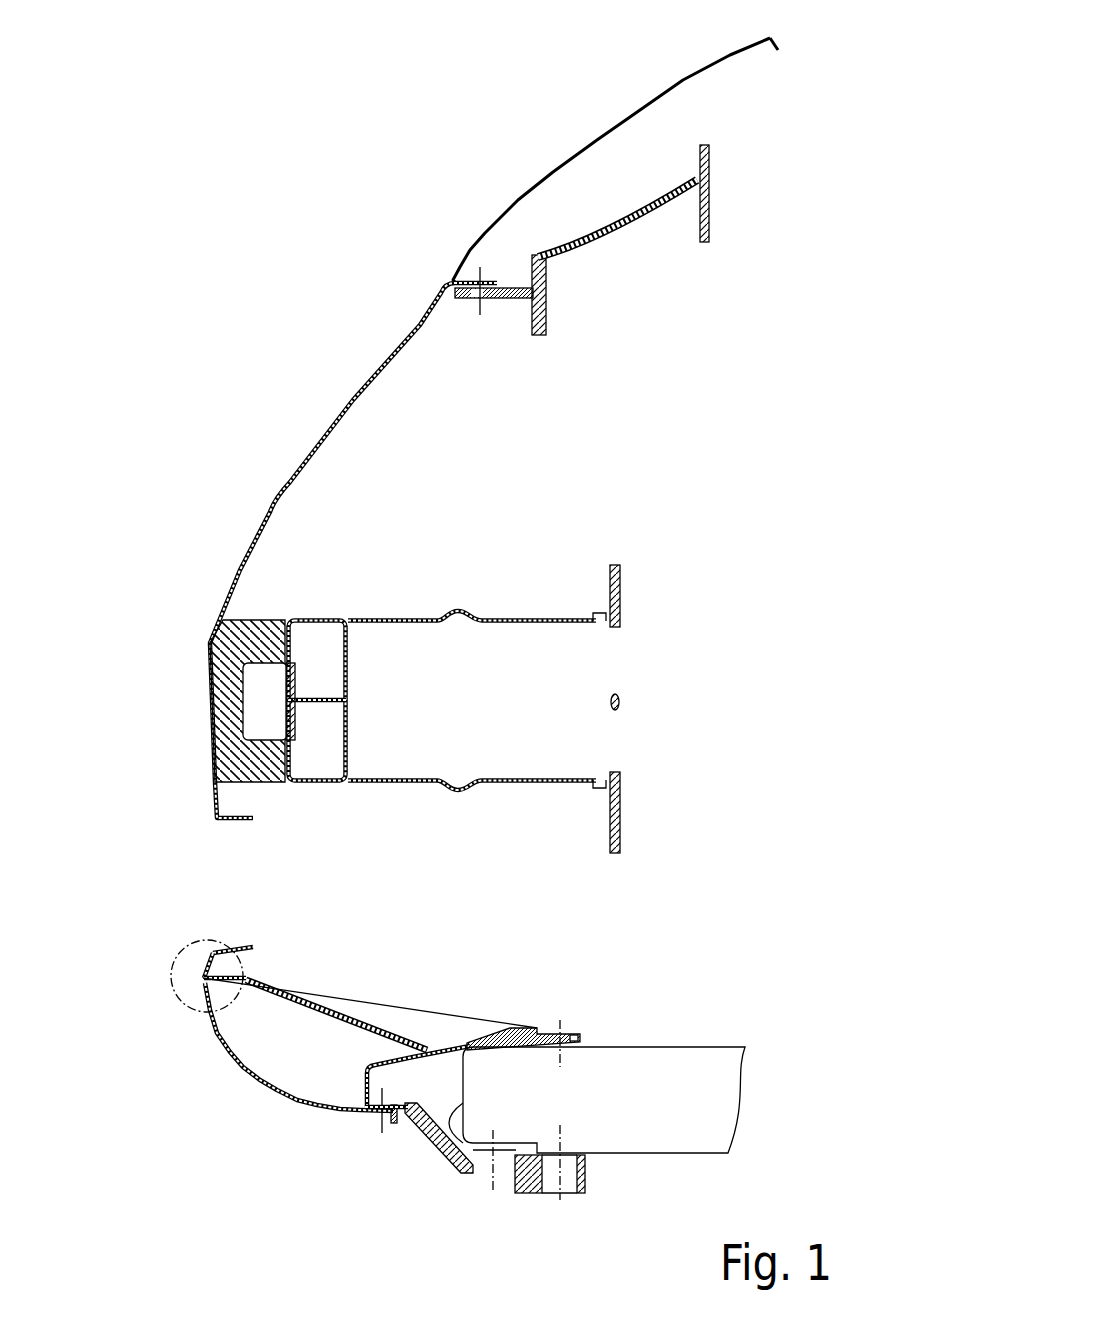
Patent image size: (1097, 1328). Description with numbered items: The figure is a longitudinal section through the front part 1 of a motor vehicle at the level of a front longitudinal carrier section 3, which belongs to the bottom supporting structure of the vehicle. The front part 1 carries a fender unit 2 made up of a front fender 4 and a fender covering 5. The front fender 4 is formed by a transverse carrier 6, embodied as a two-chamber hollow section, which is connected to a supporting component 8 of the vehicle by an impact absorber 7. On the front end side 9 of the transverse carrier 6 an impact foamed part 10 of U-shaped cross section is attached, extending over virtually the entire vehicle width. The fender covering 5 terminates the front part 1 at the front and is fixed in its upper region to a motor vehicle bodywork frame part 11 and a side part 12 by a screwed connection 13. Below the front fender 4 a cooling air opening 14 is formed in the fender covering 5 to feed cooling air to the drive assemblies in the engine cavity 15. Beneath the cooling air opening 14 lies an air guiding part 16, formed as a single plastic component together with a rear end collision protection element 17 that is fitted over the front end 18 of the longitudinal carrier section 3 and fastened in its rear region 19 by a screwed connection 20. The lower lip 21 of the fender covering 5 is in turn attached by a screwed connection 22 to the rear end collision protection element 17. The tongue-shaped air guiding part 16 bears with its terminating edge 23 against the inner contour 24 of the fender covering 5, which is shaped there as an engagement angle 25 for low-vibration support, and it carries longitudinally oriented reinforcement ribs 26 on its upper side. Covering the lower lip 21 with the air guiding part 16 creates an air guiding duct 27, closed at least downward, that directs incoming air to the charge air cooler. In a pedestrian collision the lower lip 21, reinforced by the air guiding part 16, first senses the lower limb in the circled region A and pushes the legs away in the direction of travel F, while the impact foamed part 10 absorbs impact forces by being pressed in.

The front part 1 is at (292, 156).
The fender unit 2 is at (216, 545).
The front longitudinal carrier section 3 is at (665, 1055).
The front fender 4 is at (419, 597).
The fender covering 5 is at (352, 405).
The transverse carrier 6 is at (330, 737).
The impact absorber 7 is at (546, 788).
The supporting component 8 is at (620, 812).
The front end side 9 is at (283, 720).
The impact foamed part 10 is at (223, 683).
The motor vehicle bodywork frame part 11 is at (548, 294).
The side part 12 is at (622, 118).
The screwed connection 13 is at (480, 312).
The cooling air opening 14 is at (180, 874).
The engine cavity 15 is at (683, 591).
The air guiding part 16 is at (333, 1000).
The rear end collision protection element 17 is at (522, 1195).
The front end 18 is at (455, 1135).
The rear region 19 is at (568, 1030).
The screwed connection 20 is at (560, 1145).
The lower lip 21 is at (243, 1062).
The screwed connection 22 is at (382, 1125).
The terminating edge 23 is at (207, 1002).
The inner contour 24 is at (223, 1030).
The engagement angle 25 is at (229, 947).
The reinforcement ribs 26 is at (430, 1028).
The air guiding duct 27 is at (409, 878).
The region A is at (178, 955).
The direction of travel F is at (226, 1262).